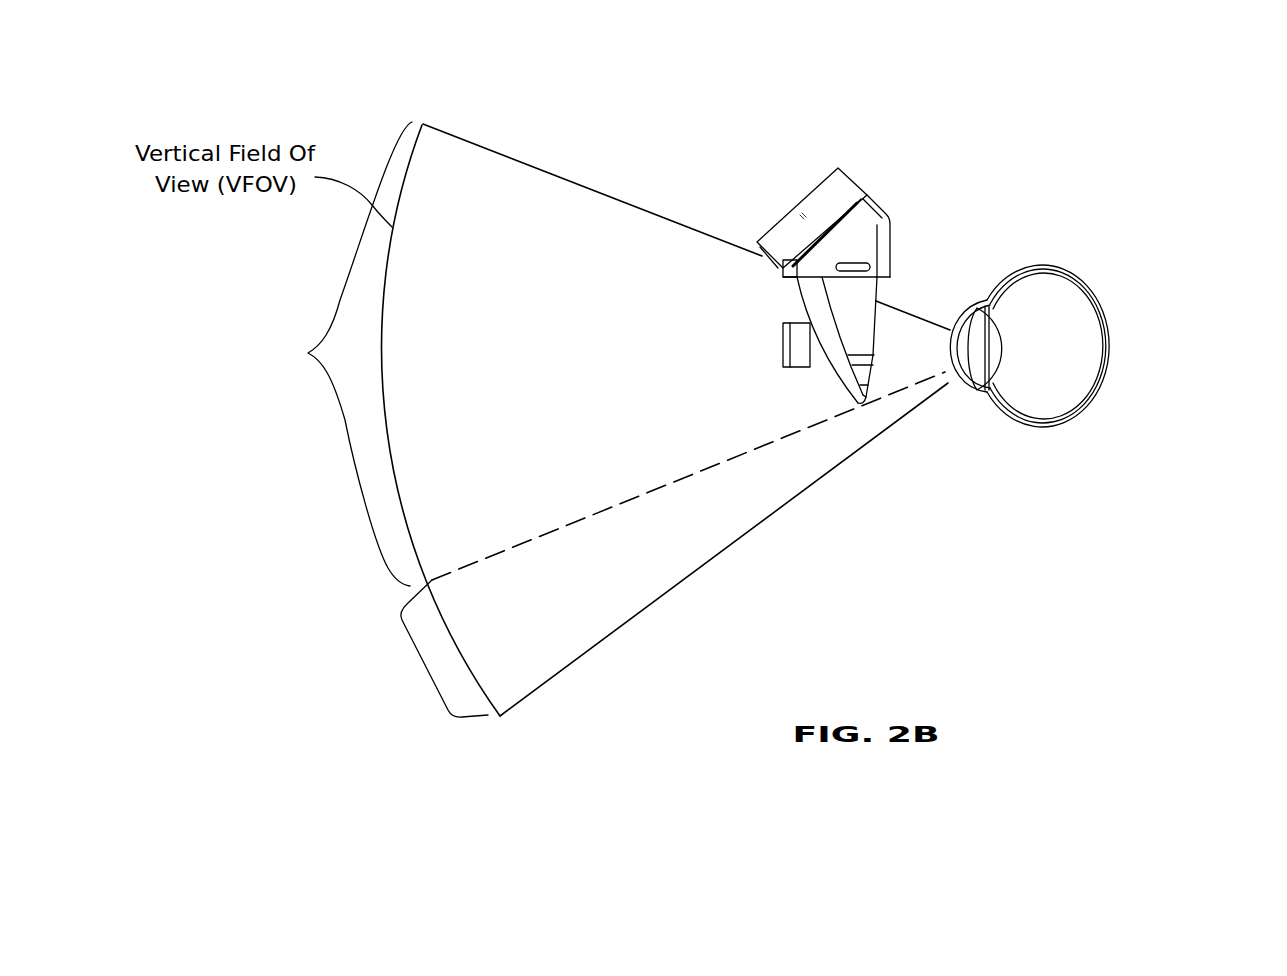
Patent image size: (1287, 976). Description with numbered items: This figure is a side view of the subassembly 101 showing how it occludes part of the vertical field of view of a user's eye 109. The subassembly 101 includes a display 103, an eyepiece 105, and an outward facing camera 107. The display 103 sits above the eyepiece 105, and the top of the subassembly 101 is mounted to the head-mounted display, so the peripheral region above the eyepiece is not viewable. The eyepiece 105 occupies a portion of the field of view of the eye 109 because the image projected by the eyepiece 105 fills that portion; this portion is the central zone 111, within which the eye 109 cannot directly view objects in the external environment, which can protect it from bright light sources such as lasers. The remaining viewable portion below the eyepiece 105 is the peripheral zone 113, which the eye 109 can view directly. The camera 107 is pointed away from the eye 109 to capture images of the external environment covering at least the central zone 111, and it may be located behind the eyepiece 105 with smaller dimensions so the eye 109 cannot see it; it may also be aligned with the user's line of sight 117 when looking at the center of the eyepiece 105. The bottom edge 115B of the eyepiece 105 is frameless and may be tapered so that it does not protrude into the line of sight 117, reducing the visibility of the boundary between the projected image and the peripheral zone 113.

The subassembly 101 is at (752, 157).
The display 103 is at (827, 202).
The eyepiece 105 is at (872, 298).
The camera 107 is at (783, 337).
The eye 109 is at (1066, 343).
The central zone 111 is at (279, 354).
The peripheral zone 113 is at (428, 665).
The bottom edge 115B is at (870, 401).
The line of sight 117 is at (722, 462).